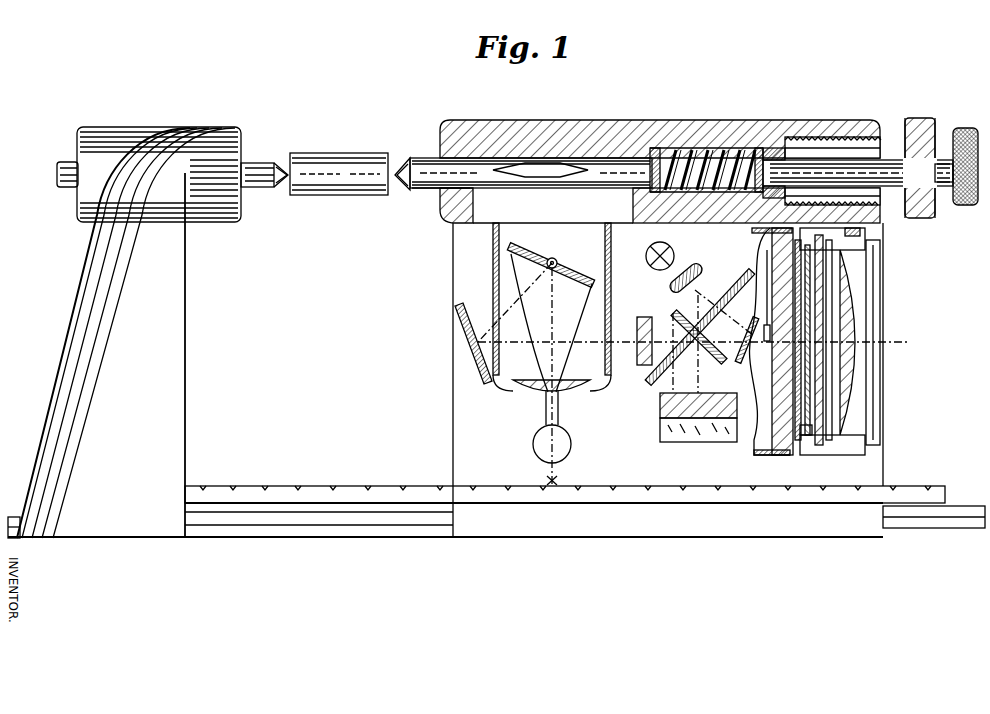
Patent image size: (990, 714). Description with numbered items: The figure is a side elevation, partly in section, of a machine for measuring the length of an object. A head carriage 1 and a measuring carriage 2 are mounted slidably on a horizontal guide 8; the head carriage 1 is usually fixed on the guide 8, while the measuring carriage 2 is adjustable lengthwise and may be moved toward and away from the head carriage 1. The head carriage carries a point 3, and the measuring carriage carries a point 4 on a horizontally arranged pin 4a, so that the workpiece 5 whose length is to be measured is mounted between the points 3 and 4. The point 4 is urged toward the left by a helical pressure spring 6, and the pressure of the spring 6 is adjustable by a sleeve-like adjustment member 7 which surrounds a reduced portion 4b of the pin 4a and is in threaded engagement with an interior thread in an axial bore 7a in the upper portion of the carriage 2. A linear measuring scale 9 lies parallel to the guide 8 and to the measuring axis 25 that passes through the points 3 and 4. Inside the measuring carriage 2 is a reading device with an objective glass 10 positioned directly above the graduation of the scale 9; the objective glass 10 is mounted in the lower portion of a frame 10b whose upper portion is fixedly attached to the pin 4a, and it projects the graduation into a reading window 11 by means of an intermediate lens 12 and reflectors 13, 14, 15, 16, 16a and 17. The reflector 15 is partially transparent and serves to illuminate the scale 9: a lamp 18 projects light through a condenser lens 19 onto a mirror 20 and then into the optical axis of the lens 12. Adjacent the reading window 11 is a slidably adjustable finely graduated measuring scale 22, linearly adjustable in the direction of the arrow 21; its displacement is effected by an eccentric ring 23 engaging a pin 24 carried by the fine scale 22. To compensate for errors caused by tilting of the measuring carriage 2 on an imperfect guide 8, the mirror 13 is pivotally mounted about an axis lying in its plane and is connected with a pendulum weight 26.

The head carriage 1 is at (202, 198).
The measuring carriage 2 is at (479, 140).
The point 3 is at (283, 167).
The point 4 is at (401, 168).
The pin 4a is at (470, 168).
The reduced portion of the pin 4b is at (830, 165).
The workpiece 5 is at (341, 190).
The helical pressure spring 6 is at (700, 148).
The adjusting knob 7 is at (915, 125).
The axial bore 7a is at (770, 150).
The horizontal guide 8 is at (357, 537).
The measuring scale 9 is at (466, 493).
The objective glass 10 is at (525, 393).
The frame 10b is at (493, 260).
The reading window 11 is at (800, 305).
The intermediate lens 12 is at (641, 322).
The mirror 13 is at (570, 278).
The reflector 14 is at (460, 328).
The reflector 15 is at (695, 325).
The reflector 16 is at (692, 432).
The reflector 16a is at (698, 430).
The reflector 17 is at (726, 294).
The lamp 18 is at (646, 250).
The condenser lens 19 is at (690, 268).
The mirror 20 is at (749, 355).
The arrow 21 is at (767, 330).
The finely graduated measuring scale 22 is at (803, 360).
The eccentric ring 23 is at (832, 430).
The pin 24 is at (805, 436).
The measuring axis 25 is at (426, 180).
The pendulum weight 26 is at (571, 445).